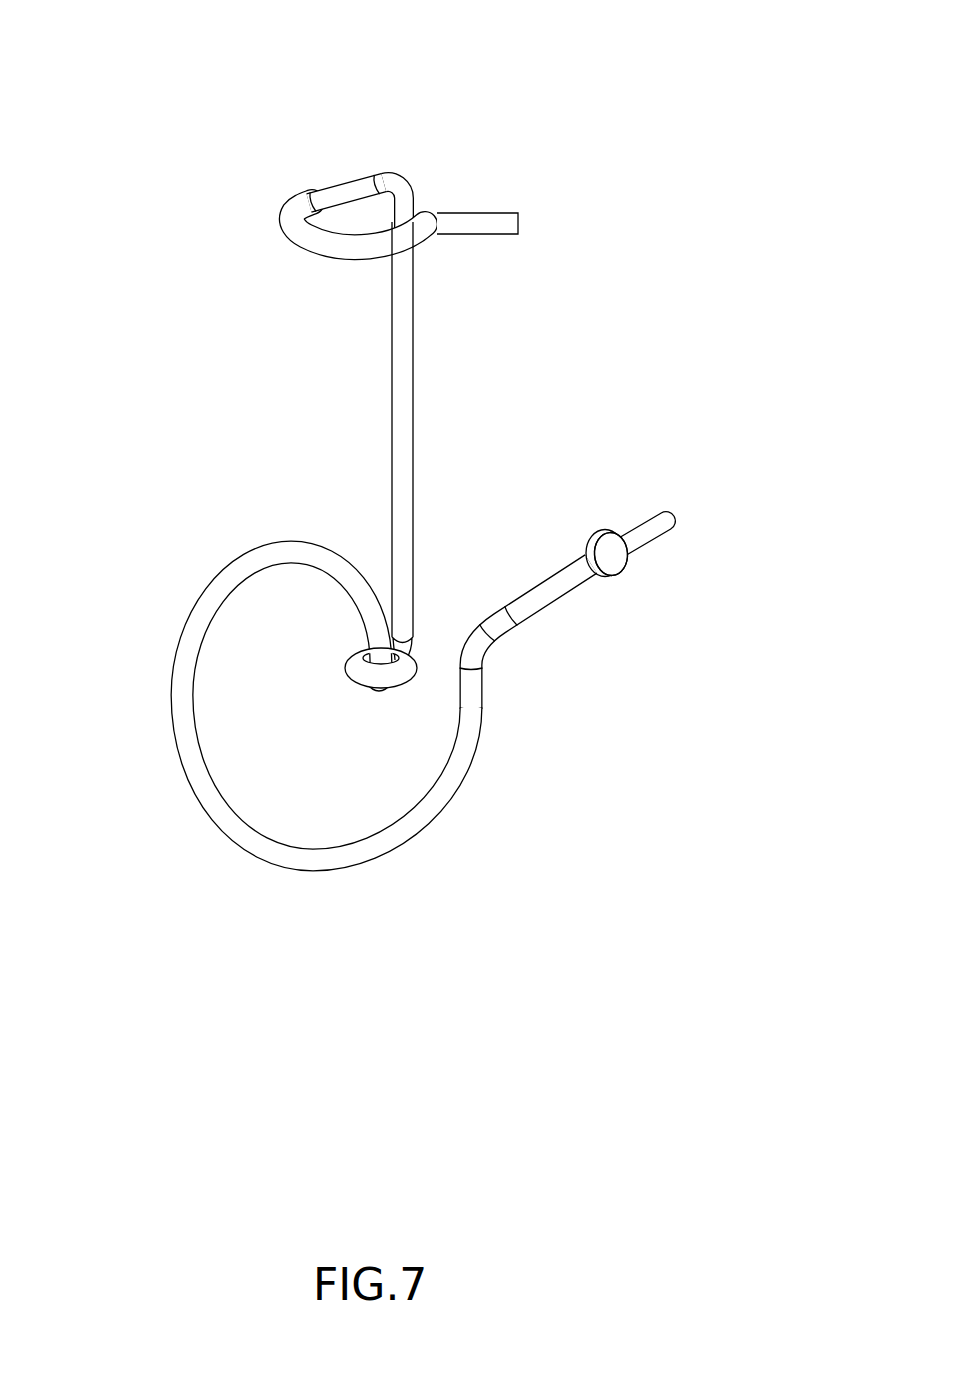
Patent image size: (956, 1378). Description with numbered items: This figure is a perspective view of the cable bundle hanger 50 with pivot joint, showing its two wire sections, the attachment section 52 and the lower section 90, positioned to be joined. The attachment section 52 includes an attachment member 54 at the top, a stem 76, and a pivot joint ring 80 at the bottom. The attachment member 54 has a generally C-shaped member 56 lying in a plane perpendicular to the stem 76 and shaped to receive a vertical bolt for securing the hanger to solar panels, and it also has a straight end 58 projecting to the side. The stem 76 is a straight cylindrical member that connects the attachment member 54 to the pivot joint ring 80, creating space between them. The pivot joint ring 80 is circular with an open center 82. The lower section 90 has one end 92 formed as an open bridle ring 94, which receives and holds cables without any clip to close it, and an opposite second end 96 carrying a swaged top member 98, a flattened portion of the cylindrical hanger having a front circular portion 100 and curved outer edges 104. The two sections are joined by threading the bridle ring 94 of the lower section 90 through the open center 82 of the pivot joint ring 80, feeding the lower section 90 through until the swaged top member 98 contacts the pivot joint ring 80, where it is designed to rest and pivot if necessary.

The cable bundle hanger 50 is at (183, 125).
The attachment section 52 is at (395, 193).
The attachment member 54 is at (335, 183).
The C-shaped member 56 is at (330, 245).
The tab 58 is at (488, 222).
The stem 76 is at (405, 342).
The pivot joint ring 80 is at (402, 670).
The open center 82 is at (368, 648).
The lower section 90 is at (440, 805).
The one end 92 is at (373, 613).
The open bridle ring 94 is at (233, 577).
The second end 96 is at (650, 527).
The swaged top member 98 is at (612, 575).
The front circular portion 100 is at (613, 553).
The curved outer edges 104 is at (588, 536).